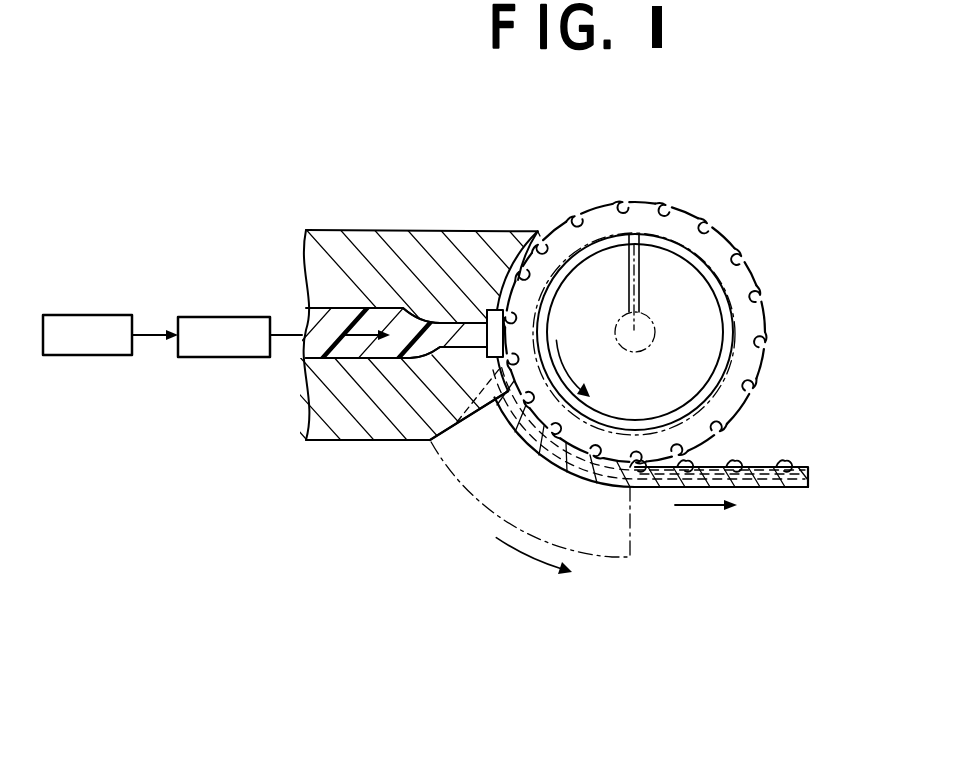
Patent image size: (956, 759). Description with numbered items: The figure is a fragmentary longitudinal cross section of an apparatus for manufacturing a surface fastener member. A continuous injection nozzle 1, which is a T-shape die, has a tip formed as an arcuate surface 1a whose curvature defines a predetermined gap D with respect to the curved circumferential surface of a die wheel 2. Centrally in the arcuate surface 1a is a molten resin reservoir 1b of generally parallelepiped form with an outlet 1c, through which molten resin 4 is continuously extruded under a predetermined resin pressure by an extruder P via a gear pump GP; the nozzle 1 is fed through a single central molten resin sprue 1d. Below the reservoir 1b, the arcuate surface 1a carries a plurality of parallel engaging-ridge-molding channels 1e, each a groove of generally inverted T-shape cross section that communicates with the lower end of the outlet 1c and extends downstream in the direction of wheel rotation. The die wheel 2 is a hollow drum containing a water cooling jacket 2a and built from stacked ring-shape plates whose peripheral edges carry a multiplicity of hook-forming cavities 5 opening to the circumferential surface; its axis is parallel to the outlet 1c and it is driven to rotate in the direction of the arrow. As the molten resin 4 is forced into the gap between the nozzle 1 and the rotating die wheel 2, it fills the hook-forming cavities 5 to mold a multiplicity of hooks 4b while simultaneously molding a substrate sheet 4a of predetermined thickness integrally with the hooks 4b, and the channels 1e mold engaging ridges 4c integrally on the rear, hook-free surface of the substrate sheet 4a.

The continuous injection nozzle 1 is at (308, 272).
The arcuate surface 1a is at (541, 231).
The molten resin reservoir 1b is at (479, 322).
The outlet 1c is at (450, 308).
The molten resin sprue 1d is at (332, 360).
The engaging-ridge-molding channel 1e is at (452, 430).
The die wheel 2 is at (752, 278).
The water cooling jacket 2a is at (763, 332).
The molten resin 4 is at (306, 325).
The substrate sheet 4a is at (760, 480).
The hooks 4b is at (783, 461).
The engaging ridges 4c is at (780, 487).
The hook-forming cavities 5 is at (740, 260).
The gap D is at (514, 230).
The extruder P is at (87, 335).
The gear pump GP is at (217, 337).